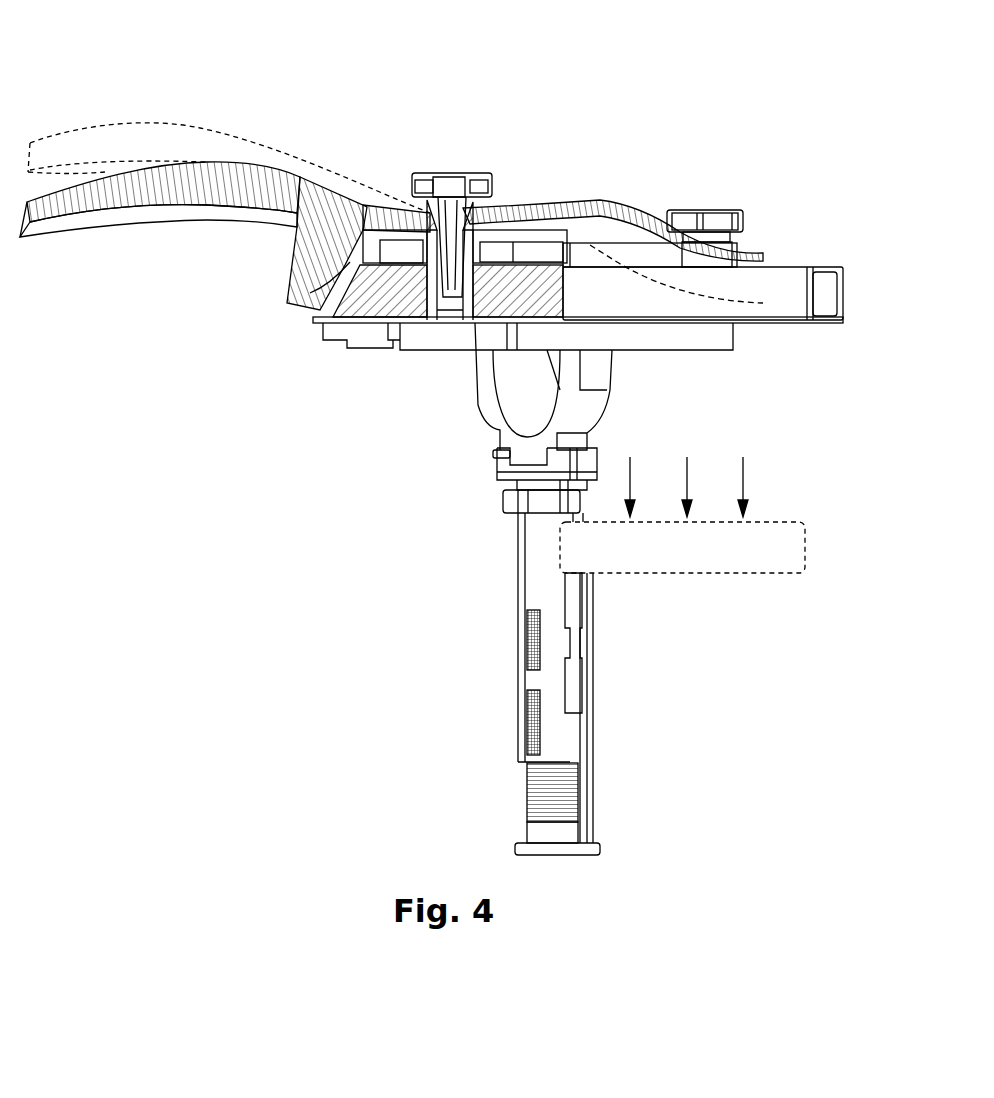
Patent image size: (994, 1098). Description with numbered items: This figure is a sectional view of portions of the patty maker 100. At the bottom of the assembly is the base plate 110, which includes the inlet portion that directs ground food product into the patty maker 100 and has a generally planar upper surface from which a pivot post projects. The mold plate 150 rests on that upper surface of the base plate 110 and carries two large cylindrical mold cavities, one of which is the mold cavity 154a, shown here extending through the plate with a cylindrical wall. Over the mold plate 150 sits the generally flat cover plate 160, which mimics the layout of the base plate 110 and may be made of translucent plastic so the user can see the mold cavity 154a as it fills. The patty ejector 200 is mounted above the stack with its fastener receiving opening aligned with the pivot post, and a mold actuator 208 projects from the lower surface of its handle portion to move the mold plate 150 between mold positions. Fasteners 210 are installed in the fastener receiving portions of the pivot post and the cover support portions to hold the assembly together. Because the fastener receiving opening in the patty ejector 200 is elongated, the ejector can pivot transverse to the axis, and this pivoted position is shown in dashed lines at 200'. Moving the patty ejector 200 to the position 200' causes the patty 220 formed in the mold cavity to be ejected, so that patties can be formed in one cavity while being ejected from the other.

The patty maker 100 is at (605, 74).
The base plate 110 is at (440, 340).
The mold plate 150 is at (557, 290).
The mold cavity 154a is at (650, 300).
The cover plate 160 is at (533, 250).
The patty ejector 200 is at (225, 161).
The patty ejector pivoted position 200' is at (229, 131).
The mold actuator 208 is at (285, 264).
The fasteners 210 is at (453, 173).
The patty 220 is at (773, 520).